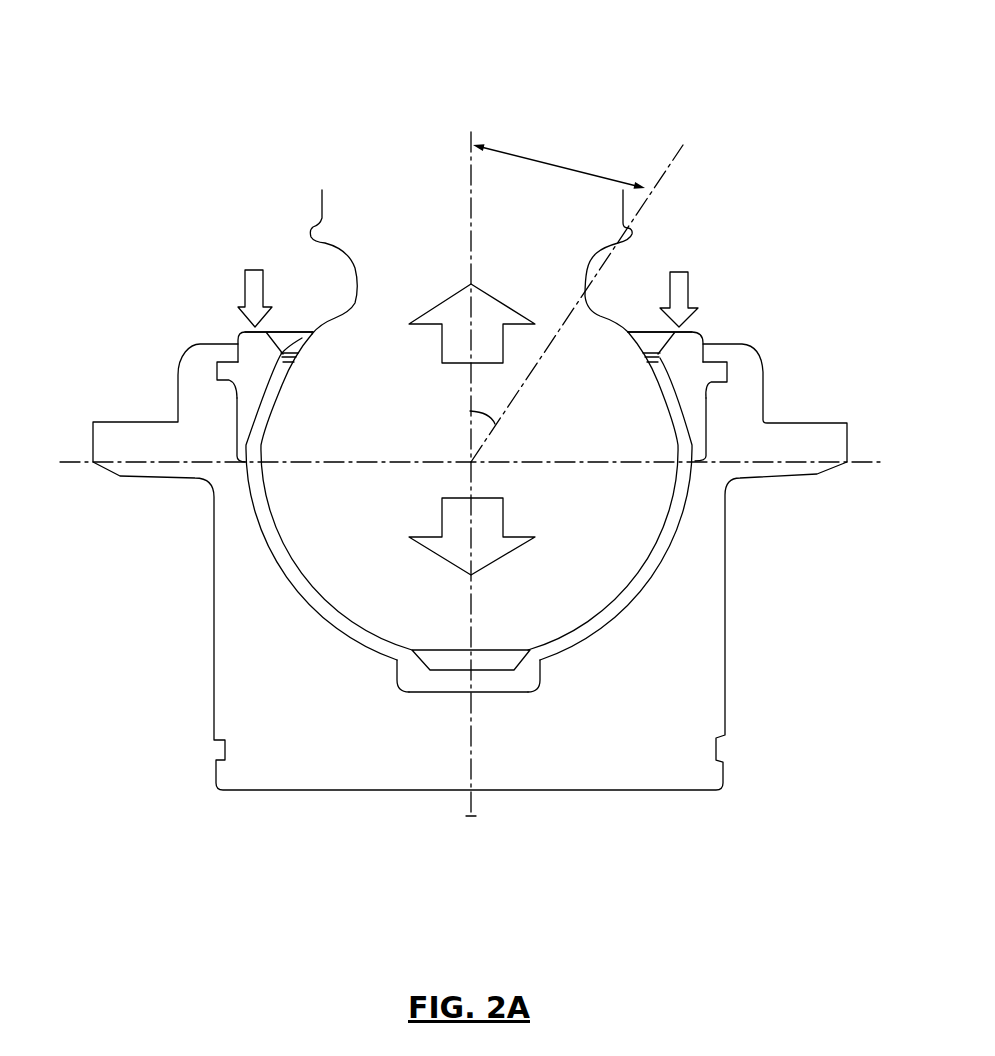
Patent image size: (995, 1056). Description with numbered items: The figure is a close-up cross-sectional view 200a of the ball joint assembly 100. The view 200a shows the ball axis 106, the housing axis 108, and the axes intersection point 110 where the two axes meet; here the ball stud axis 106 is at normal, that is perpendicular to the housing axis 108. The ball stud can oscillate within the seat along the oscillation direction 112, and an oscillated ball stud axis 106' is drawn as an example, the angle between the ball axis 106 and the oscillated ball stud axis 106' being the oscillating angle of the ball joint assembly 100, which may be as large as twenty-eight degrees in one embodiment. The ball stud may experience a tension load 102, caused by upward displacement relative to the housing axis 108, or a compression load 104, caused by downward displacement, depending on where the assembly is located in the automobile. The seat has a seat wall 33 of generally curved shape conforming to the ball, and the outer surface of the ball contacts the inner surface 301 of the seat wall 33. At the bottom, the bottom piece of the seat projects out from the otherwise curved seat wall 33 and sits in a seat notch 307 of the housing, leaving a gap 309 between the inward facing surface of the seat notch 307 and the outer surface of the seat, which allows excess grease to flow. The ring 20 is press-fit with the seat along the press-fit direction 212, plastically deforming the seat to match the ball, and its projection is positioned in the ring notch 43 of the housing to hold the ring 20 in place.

The close-up cross-sectional view 200a is at (142, 70).
The ball joint assembly 100 is at (142, 194).
The oscillation direction 112 is at (543, 162).
The ball axis 106 is at (422, 504).
The oscillated ball stud axis 106' is at (615, 303).
The housing axis 108 is at (73, 463).
The axes intersection point 110 is at (455, 466).
The press-fit direction 212 is at (245, 293).
The ring 20 is at (186, 362).
The ring notch 43 is at (217, 376).
The tension load 102 is at (441, 356).
The compression load 104 is at (502, 525).
The inner surface 301 is at (291, 558).
The seat wall 33 is at (301, 586).
The seat notch 307 is at (388, 681).
The gap 309 is at (487, 692).